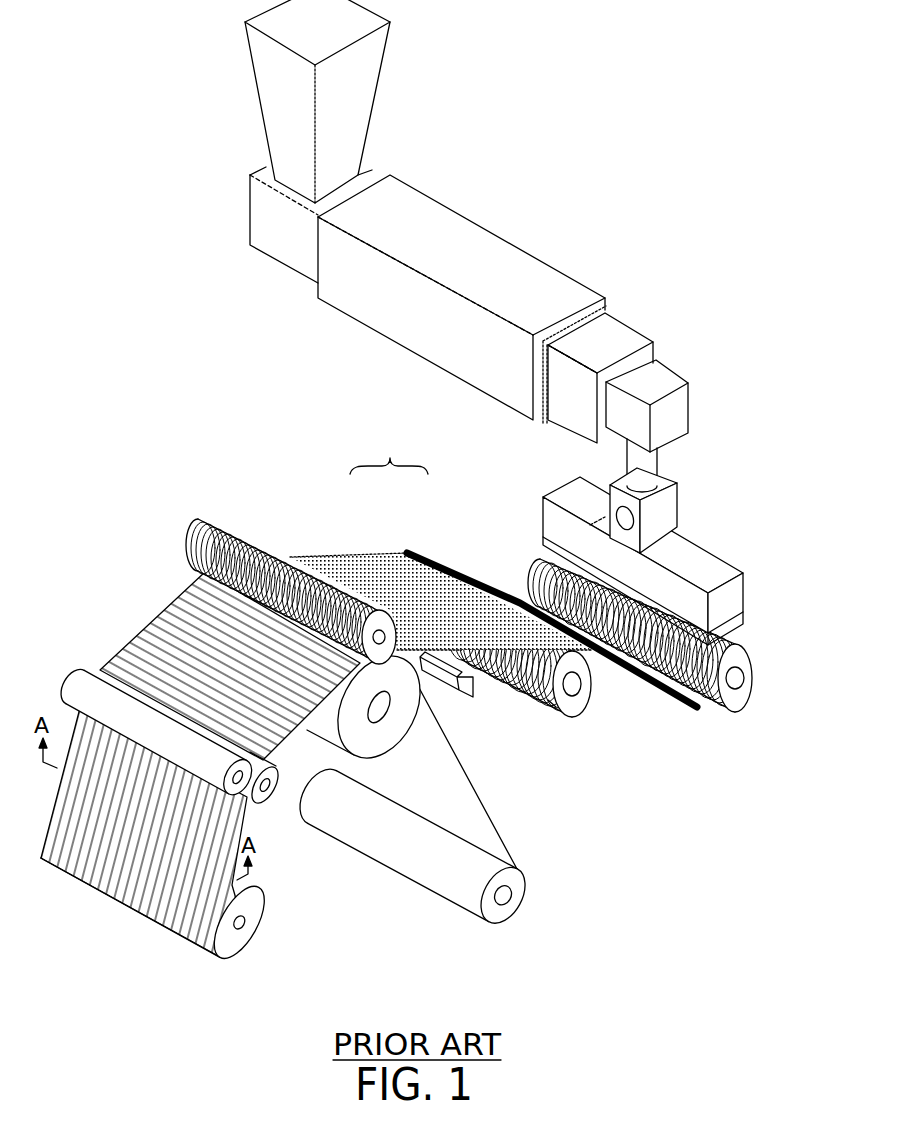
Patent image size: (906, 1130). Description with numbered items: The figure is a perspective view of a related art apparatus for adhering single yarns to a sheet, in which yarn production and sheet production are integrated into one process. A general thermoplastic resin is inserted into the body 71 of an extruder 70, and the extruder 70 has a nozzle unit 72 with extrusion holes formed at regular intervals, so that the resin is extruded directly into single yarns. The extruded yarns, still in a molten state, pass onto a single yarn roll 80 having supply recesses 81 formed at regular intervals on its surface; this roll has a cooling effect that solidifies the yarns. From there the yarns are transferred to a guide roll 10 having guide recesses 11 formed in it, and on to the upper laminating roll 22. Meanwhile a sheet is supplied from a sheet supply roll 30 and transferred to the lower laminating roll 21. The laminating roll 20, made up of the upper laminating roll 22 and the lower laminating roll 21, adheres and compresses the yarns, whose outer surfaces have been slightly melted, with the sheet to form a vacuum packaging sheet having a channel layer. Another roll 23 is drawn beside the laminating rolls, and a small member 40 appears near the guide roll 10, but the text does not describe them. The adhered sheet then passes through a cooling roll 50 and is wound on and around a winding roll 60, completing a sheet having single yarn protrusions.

The guide roll 10 is at (584, 706).
The guide recesses 11 is at (548, 700).
The laminating roll 20 is at (389, 452).
The lower laminating roll 21 is at (420, 648).
The upper laminating roll 22 is at (410, 675).
The roller 23 is at (200, 525).
The sheet supply roll 30 is at (526, 872).
The guide member 40 is at (466, 696).
The cooling roll 50 is at (248, 798).
The winding roll 60 is at (253, 915).
The extruder 70 is at (478, 166).
The body 71 is at (532, 270).
The nozzle unit 72 is at (707, 570).
The single yarn roll 80 is at (752, 660).
The supply recesses 81 is at (698, 708).